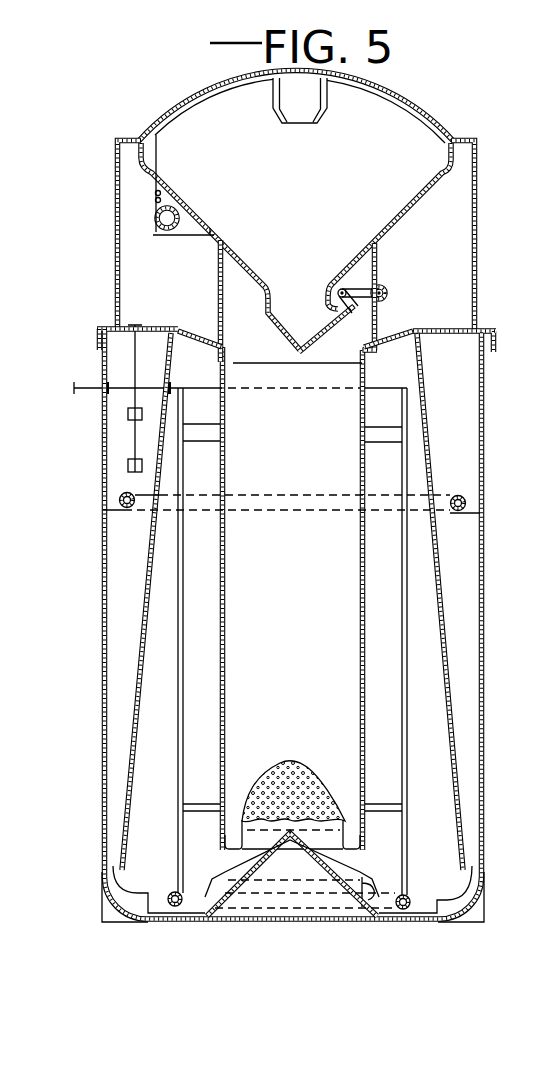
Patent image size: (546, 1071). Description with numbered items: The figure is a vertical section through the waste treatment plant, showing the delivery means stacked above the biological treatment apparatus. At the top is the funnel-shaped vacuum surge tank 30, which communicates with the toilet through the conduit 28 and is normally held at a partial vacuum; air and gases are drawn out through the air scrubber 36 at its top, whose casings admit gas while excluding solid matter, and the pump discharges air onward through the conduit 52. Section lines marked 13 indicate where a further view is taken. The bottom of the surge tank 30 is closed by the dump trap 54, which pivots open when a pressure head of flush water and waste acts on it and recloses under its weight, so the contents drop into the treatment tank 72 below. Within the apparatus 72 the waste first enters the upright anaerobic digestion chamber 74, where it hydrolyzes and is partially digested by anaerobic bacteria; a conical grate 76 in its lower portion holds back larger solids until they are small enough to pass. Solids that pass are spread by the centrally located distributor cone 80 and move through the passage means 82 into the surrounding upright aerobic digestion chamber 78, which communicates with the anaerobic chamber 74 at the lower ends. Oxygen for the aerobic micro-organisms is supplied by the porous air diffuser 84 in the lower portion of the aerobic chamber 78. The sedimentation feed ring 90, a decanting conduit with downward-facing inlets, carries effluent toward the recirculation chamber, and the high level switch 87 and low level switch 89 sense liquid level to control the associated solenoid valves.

The section line 13- 13 is at (152, 218).
The conduit 28 is at (165, 231).
The vacuum surge tank 30 is at (427, 104).
The air scrubber 36 is at (330, 98).
The conduit 52 is at (87, 385).
The dump trap 54 is at (305, 350).
The treatment tank 72 is at (490, 449).
The anaerobic digestion chamber 74 is at (227, 578).
The conical grate 76 is at (312, 779).
The aerobic digestion chamber 78 is at (428, 572).
The distributor cone 80 is at (312, 842).
The passage means 82 is at (375, 884).
The porous air diffuser 84 is at (190, 910).
The high level switch 87 is at (128, 414).
The low level switch 89 is at (128, 467).
The sedimentation feed ring 90 is at (136, 509).